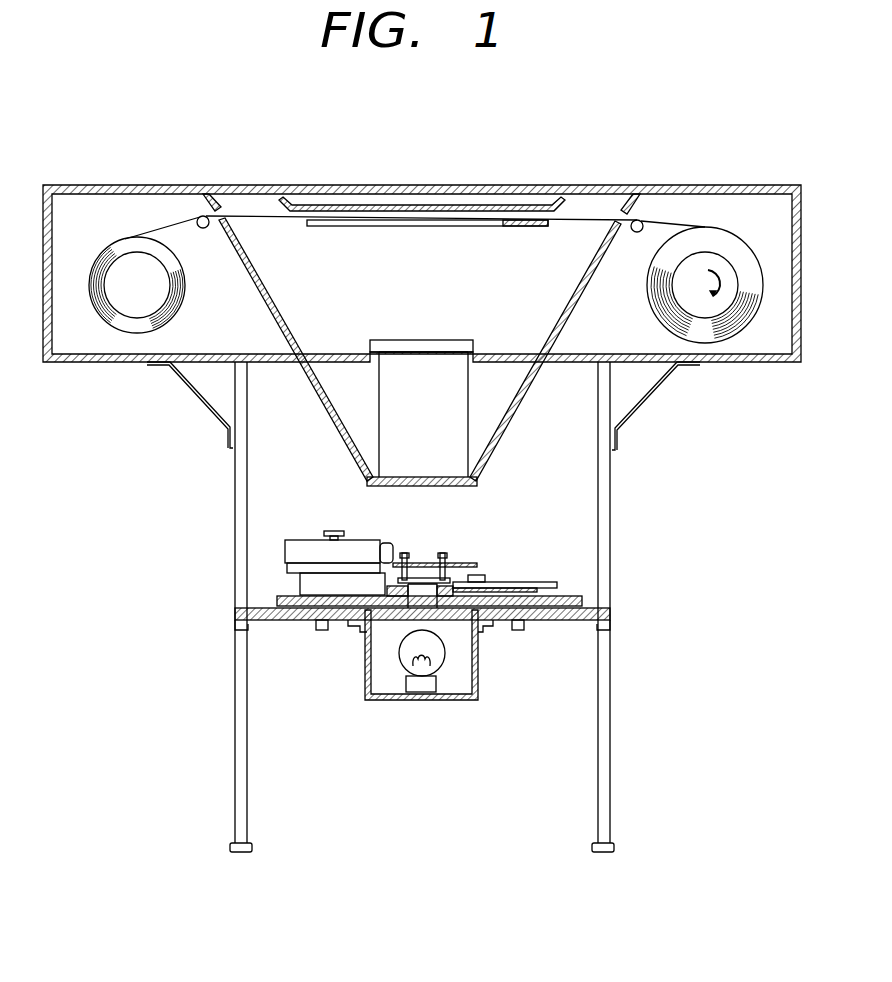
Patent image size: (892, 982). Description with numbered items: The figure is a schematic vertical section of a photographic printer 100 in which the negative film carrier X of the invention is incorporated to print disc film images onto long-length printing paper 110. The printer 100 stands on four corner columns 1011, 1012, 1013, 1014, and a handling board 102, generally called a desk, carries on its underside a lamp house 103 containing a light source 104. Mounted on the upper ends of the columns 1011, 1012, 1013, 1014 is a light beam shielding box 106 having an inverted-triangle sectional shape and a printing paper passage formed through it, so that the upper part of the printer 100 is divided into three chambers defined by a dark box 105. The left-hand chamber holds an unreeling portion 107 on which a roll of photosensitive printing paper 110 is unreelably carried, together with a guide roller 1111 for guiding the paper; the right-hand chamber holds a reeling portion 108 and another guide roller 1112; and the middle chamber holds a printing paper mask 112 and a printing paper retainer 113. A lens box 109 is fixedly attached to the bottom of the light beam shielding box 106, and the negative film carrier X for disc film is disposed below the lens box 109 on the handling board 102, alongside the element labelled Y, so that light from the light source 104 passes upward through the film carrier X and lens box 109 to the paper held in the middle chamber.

The printer 100 is at (490, 180).
The column 1011 is at (234, 521).
The column 1012 is at (610, 519).
The column 1013 is at (648, 600).
The column 1014 is at (195, 600).
The handling board 102 is at (422, 622).
The lamp house 103 is at (366, 678).
The light source 104 is at (446, 666).
The dark box 105 is at (164, 184).
The light beam shielding box 106 is at (526, 386).
The unreeling portion 107 is at (108, 318).
The reeling portion 108 is at (680, 297).
The lens box 109 is at (474, 487).
The printing paper 110 is at (258, 224).
The guide roller 1111 is at (204, 229).
The guide roller 1112 is at (632, 233).
The printing paper mask 112 is at (442, 228).
The printing paper retainer 113 is at (398, 201).
The negative film carrier X is at (317, 537).
The Y stage Y is at (552, 582).